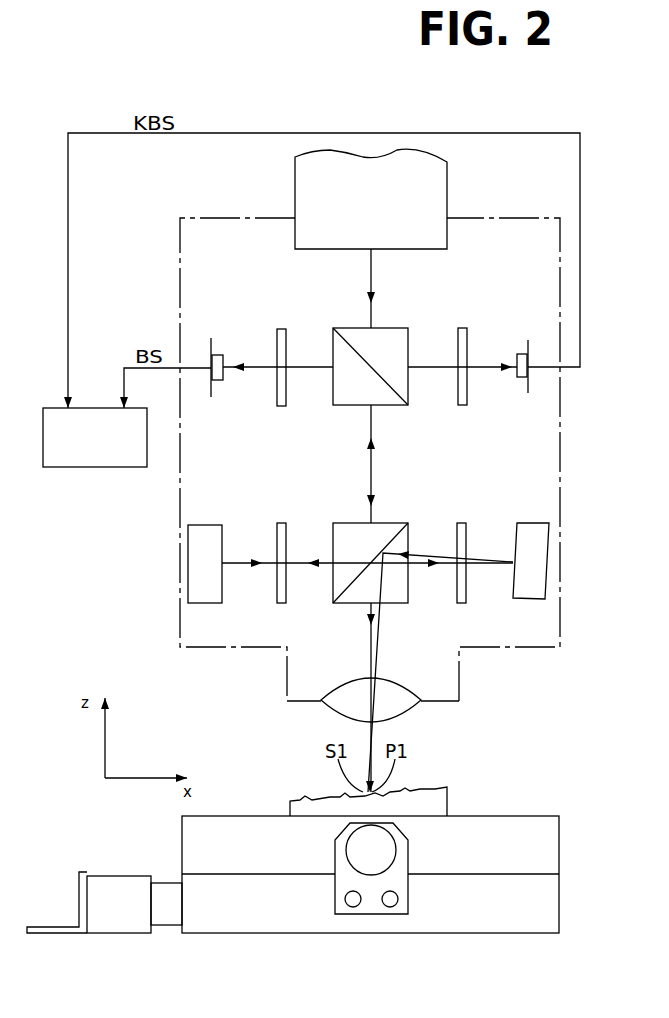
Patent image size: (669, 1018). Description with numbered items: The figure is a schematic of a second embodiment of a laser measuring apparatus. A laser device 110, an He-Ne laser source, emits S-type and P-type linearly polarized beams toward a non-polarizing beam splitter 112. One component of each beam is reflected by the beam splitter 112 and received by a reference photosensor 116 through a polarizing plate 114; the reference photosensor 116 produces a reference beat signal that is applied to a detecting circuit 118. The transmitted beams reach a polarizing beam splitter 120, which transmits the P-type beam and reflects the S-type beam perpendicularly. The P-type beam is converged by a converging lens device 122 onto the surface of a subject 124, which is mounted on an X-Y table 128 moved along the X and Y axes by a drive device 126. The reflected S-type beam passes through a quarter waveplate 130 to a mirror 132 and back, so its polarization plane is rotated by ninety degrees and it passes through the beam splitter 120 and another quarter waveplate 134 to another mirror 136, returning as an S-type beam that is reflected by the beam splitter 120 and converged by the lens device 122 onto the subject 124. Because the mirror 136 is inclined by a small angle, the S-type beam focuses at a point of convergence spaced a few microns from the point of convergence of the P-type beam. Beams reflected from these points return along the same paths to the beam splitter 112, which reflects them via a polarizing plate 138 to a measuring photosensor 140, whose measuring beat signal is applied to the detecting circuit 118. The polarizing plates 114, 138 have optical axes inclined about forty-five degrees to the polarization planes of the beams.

The laser device 110 is at (447, 186).
The non-polarizing beam splitter 112 is at (392, 336).
The polarizing plate 114 is at (463, 339).
The reference photosensor 116 is at (522, 380).
The detecting circuit 118 is at (88, 467).
The polarizing beam splitter 120 is at (348, 532).
The converging lens device 122 is at (400, 692).
The subject 124 is at (432, 798).
The drive device 126 is at (392, 853).
The X-Y table 128 is at (542, 828).
The ¼ waveplate 130 is at (282, 533).
The mirror 132 is at (207, 532).
The ¼ waveplate 134 is at (458, 528).
The mirror 136 is at (522, 537).
The polarizing plate 138 is at (283, 343).
The measuring photosensor 140 is at (217, 358).